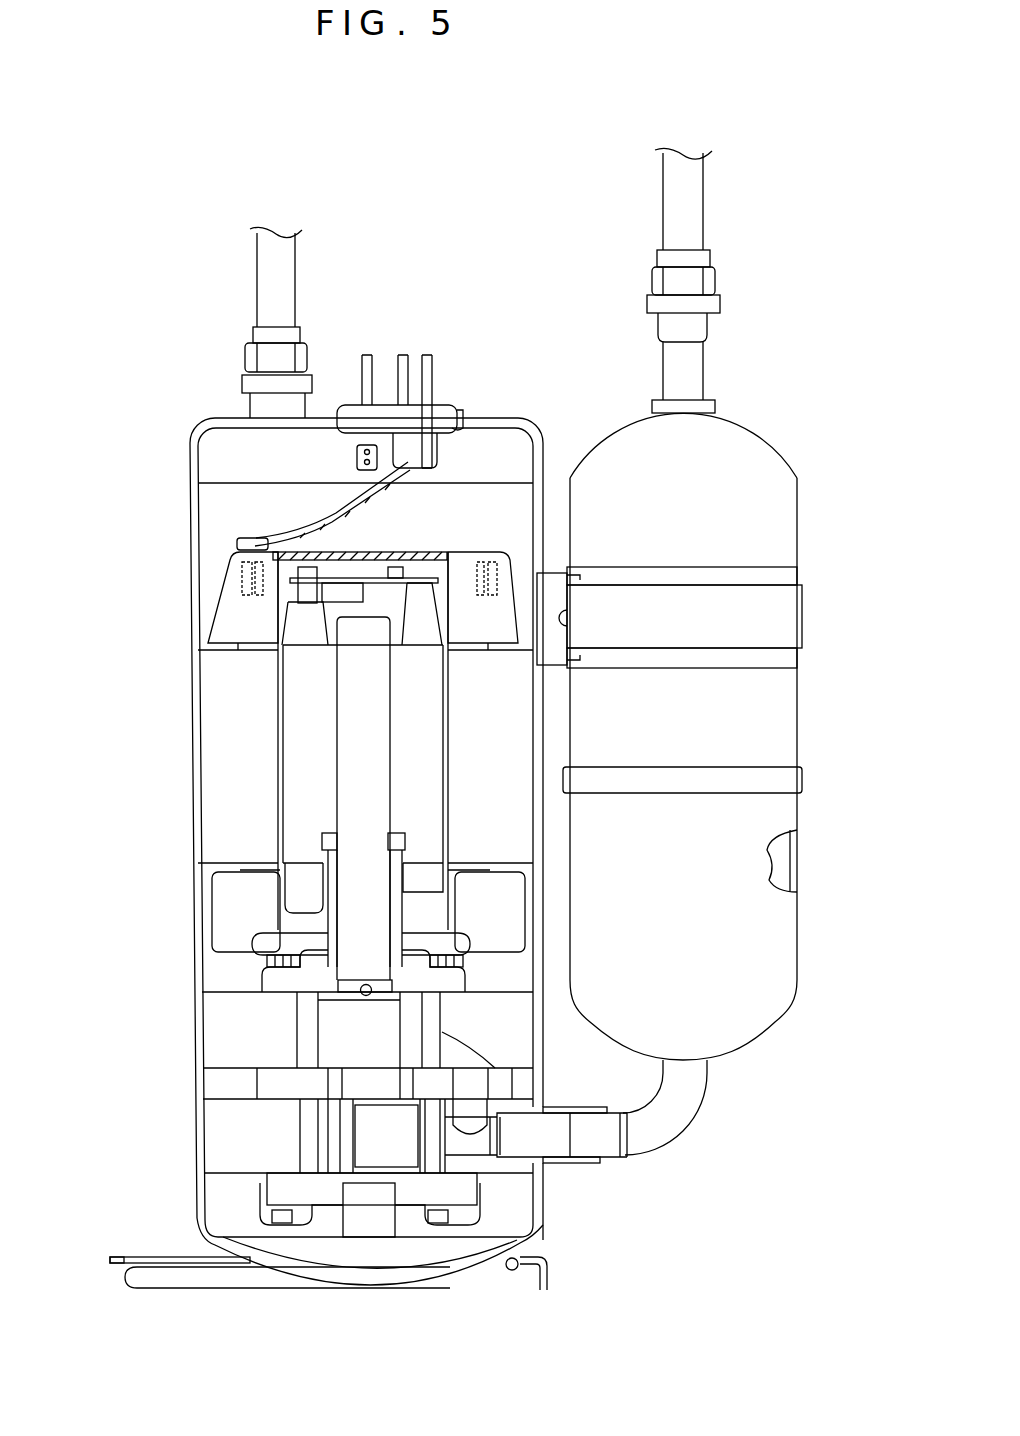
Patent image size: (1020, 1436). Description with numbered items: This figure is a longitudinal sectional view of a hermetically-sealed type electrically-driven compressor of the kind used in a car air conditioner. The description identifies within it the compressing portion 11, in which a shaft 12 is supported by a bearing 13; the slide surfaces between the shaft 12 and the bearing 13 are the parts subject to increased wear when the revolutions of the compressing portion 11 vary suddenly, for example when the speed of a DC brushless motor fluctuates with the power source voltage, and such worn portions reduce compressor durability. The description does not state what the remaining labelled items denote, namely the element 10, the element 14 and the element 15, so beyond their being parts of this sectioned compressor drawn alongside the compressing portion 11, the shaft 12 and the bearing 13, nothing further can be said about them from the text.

The electric motor section 10 is at (171, 567).
The compressing portion 11 is at (177, 970).
The shaft 12 is at (357, 963).
The bearing 13 is at (450, 985).
The lead wire 14 is at (251, 537).
The stator coil 15 is at (230, 597).